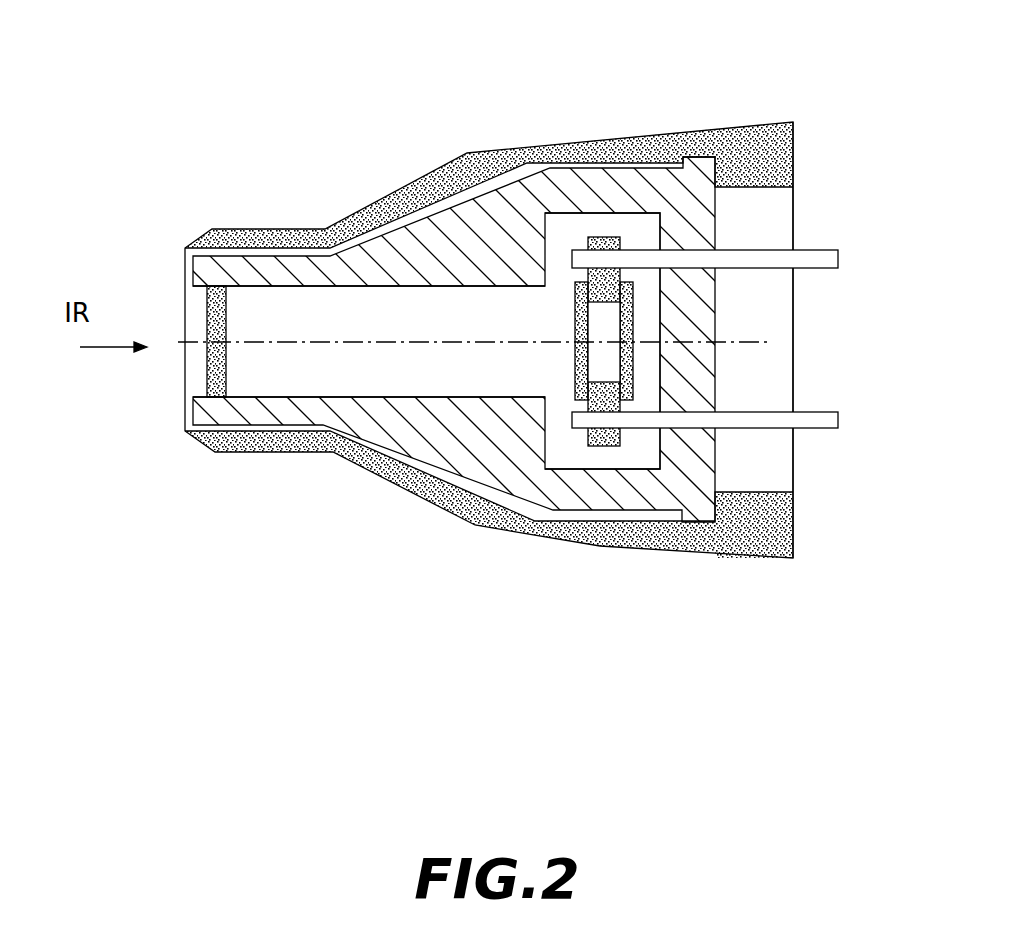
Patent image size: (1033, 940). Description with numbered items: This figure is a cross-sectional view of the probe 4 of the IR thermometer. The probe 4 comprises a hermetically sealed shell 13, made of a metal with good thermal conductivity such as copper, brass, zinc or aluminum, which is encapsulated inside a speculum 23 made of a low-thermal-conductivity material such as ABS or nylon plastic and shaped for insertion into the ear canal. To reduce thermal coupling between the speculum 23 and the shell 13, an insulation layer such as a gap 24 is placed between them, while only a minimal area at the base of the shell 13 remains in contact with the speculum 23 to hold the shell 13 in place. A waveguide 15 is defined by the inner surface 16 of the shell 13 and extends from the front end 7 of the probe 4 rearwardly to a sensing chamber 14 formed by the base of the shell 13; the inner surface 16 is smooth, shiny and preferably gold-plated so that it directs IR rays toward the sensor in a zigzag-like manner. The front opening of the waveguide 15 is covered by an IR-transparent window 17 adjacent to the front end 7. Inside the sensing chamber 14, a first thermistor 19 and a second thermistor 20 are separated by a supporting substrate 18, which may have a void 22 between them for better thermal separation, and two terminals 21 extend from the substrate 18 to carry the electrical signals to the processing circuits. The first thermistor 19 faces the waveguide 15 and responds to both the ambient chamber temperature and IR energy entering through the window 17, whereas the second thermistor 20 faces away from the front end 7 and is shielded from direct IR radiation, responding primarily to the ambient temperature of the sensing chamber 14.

The probe 4 is at (387, 147).
The front end 7 is at (173, 302).
The shell 13 is at (373, 248).
The sensing chamber 14 is at (643, 227).
The waveguide 15 is at (458, 372).
The inner surface 16 is at (373, 397).
The window 17 is at (207, 375).
The supporting substrate 18 is at (598, 228).
The first thermistor 19 is at (577, 363).
The second thermistor 20 is at (627, 393).
The terminals 21 is at (840, 258).
The void 22 is at (603, 368).
The speculum 23 is at (792, 143).
The gap 24 is at (272, 430).